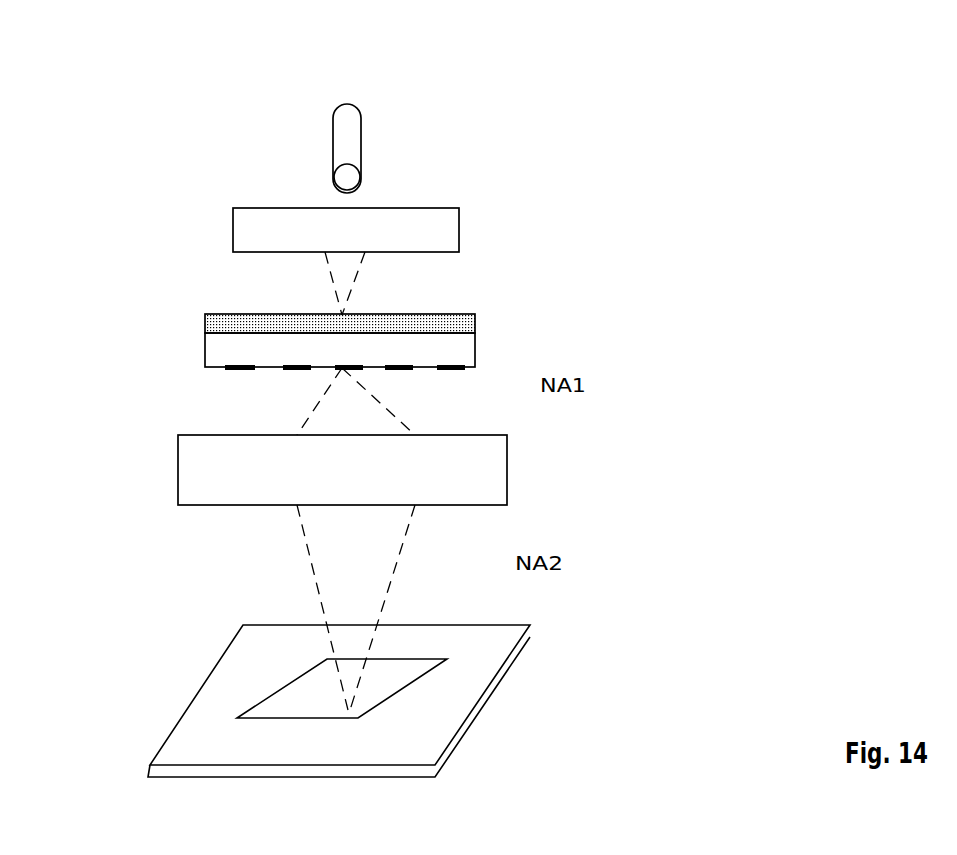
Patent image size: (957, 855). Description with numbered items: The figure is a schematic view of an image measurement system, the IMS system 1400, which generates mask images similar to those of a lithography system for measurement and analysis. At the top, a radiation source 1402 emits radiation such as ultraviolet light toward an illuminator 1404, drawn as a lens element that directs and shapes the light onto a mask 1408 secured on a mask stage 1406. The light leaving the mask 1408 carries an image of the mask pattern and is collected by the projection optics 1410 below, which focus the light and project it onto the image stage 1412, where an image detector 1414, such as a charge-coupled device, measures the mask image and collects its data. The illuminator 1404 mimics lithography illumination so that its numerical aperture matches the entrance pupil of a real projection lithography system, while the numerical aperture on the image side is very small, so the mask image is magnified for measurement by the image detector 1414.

The IMS system 1400 is at (793, 119).
The radiation source 1402 is at (345, 103).
The illuminator 1404 is at (462, 236).
The mask stage 1406 is at (212, 325).
The mask 1408 is at (212, 352).
The projection optics 1410 is at (495, 452).
The image stage 1412 is at (490, 660).
The image detector 1414 is at (330, 682).